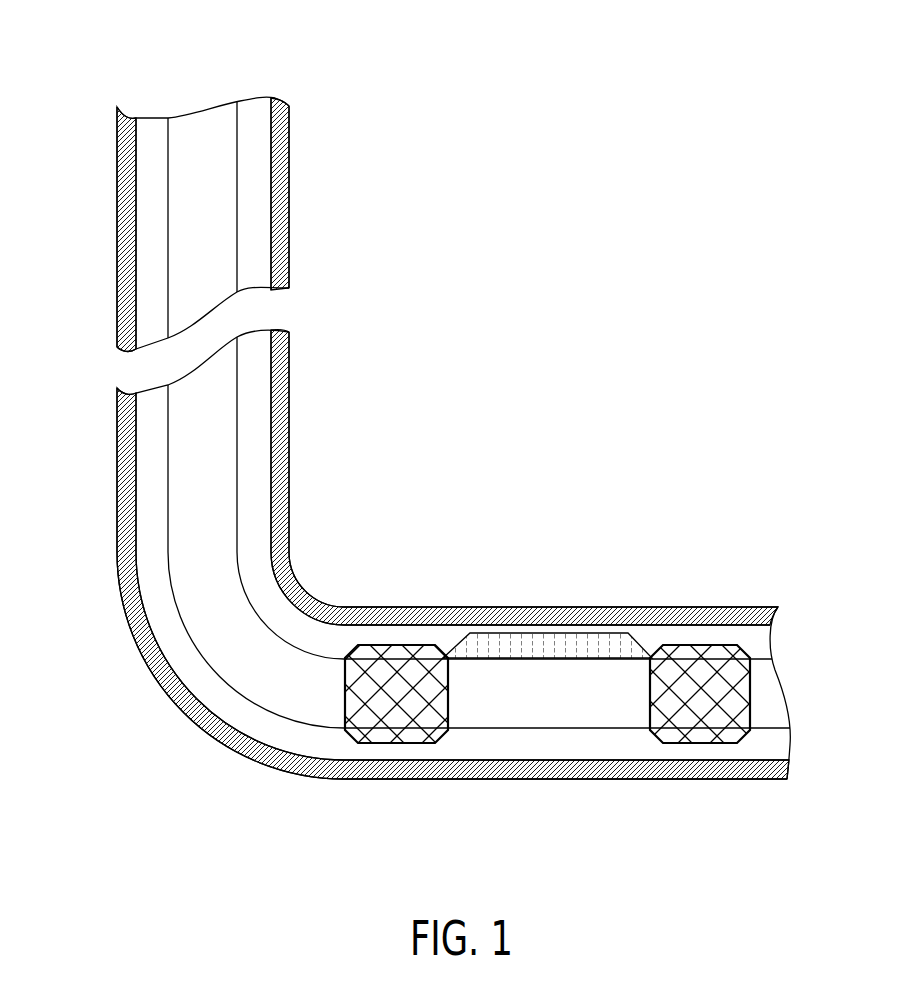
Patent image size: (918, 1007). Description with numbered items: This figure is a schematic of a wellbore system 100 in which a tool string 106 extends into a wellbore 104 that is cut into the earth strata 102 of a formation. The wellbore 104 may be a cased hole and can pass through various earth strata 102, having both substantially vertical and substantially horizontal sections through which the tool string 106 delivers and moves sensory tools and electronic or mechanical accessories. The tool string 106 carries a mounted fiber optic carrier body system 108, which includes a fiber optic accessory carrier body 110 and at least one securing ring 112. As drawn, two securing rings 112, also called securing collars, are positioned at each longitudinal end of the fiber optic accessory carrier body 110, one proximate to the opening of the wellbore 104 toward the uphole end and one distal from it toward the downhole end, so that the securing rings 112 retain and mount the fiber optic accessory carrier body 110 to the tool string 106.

The wellbore system 100 is at (424, 429).
The earth strata 102 is at (117, 495).
The wellbore 104 is at (253, 438).
The tool string 106 is at (220, 198).
The fiber optic carrier body system 108 is at (752, 782).
The fiber optic accessory carrier body 110 is at (563, 640).
The securing ring 112 is at (390, 653).